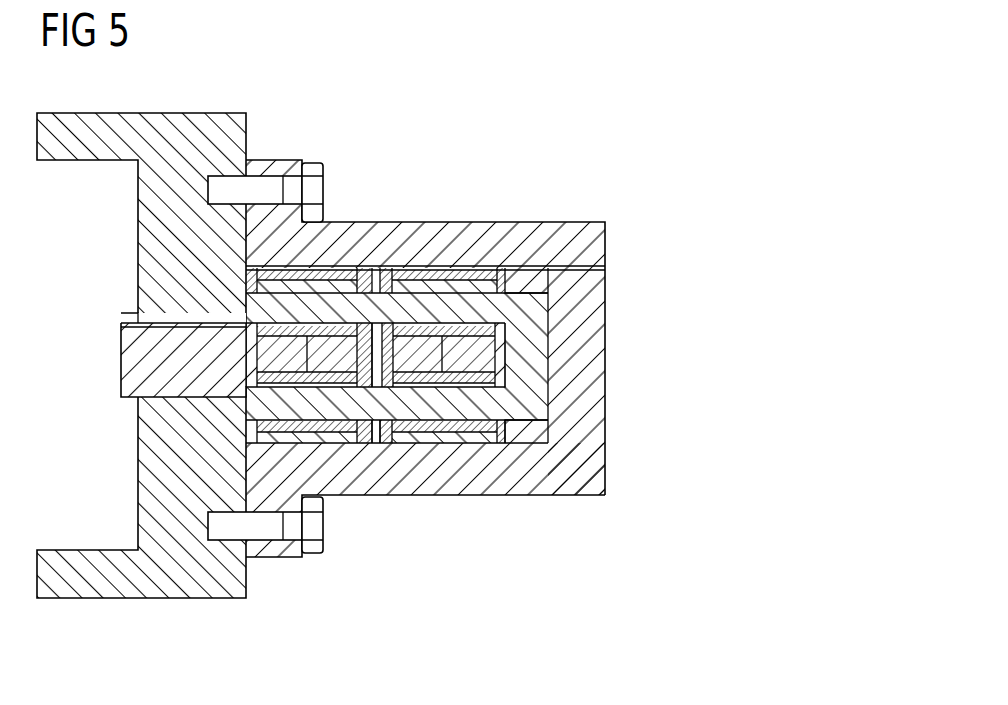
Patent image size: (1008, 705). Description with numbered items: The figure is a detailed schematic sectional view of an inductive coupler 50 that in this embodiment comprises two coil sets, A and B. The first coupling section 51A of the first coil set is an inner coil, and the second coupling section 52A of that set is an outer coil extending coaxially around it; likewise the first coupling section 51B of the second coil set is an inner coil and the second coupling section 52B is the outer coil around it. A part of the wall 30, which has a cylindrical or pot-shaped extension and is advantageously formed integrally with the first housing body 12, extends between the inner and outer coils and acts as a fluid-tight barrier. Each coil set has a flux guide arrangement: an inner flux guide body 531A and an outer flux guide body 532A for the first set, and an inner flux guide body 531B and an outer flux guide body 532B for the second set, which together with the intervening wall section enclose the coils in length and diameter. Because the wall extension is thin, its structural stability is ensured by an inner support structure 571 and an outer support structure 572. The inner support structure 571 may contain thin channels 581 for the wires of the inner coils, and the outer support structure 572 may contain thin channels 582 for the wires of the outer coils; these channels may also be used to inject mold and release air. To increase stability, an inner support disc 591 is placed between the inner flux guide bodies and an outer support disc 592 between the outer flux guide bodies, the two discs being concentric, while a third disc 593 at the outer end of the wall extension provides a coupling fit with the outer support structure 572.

The first housing body 12 is at (210, 113).
The wall 30 is at (552, 383).
The inductive coupler 50 is at (623, 136).
The first coupling section of the first coil set 51A is at (316, 388).
The first coupling section of the second coil set 51B is at (462, 385).
The second coupling section of the first coil set 52A is at (340, 286).
The second coupling section of the second coil set 52B is at (457, 280).
The inner flux guide body 531A is at (250, 362).
The inner flux guide body 531B is at (503, 343).
The outer flux guide body 532A is at (250, 279).
The outer flux guide body 532B is at (501, 268).
The inner support structure 571 is at (131, 372).
The outer support structure 572 is at (596, 222).
The thin channel 581 is at (121, 323).
The thin channel 582 is at (605, 268).
The inner support disc 591 is at (377, 330).
The outer support disc 592 is at (378, 434).
The third disc 593 is at (533, 445).